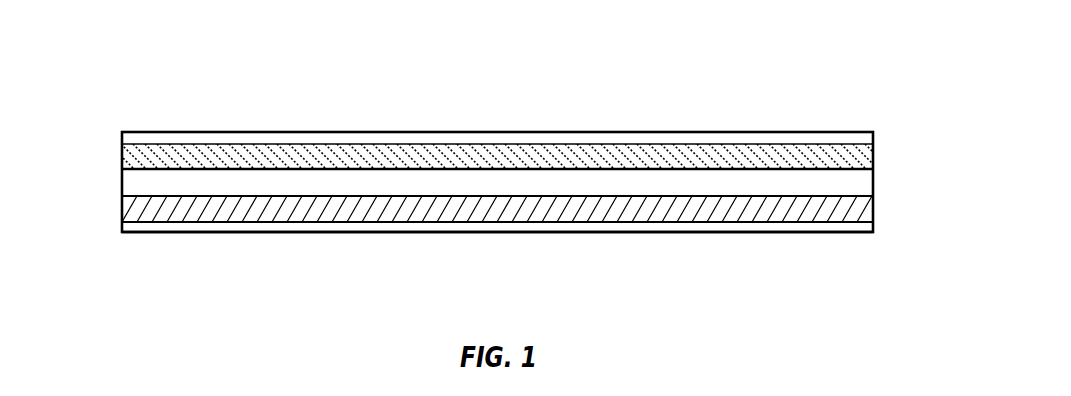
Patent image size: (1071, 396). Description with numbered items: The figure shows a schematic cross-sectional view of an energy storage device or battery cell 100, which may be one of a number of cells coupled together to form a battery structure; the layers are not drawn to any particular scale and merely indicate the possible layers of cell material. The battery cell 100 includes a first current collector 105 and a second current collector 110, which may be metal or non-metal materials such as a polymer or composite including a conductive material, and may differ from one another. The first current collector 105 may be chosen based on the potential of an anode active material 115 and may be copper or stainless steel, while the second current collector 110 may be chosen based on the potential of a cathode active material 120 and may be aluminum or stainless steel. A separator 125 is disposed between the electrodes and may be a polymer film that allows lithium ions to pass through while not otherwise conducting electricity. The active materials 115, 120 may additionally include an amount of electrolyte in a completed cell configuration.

The battery cell 100 is at (256, 76).
The first current collector 105 is at (330, 233).
The second current collector 110 is at (723, 132).
The anode active material 115 is at (122, 208).
The cathode active material 120 is at (873, 154).
The separator 125 is at (873, 188).